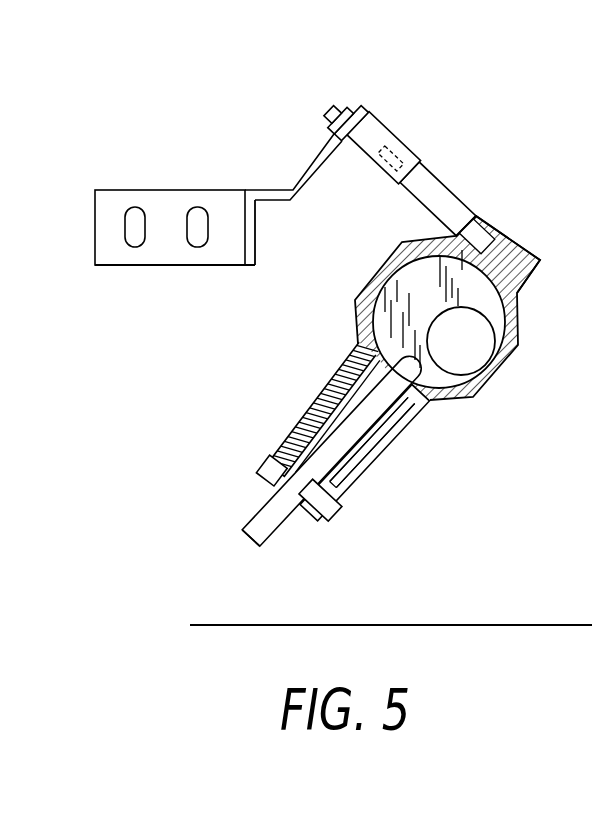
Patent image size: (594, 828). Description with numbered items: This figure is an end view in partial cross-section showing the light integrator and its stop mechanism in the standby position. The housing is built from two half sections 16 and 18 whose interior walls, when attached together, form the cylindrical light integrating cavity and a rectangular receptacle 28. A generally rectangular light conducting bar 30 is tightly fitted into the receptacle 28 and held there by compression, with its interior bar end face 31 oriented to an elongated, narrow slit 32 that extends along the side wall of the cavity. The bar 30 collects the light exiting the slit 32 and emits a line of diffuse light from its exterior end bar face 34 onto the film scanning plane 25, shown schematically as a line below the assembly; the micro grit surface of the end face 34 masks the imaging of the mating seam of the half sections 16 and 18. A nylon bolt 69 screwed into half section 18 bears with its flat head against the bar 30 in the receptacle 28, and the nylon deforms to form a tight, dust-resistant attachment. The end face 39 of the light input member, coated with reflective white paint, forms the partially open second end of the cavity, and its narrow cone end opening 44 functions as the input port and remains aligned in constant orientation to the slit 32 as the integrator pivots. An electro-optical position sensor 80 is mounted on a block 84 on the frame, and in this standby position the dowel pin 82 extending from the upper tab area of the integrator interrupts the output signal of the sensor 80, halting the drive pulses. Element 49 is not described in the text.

The half section 16 is at (355, 320).
The half section 18 is at (470, 398).
The film scanning plane 25 is at (497, 624).
The rectangular receptacle 28 is at (360, 433).
The light conducting bar 30 is at (268, 518).
The interior bar end face 31 is at (428, 372).
The slit 32 is at (372, 442).
The exterior end bar face 34 is at (246, 534).
The end face 39 is at (412, 288).
The narrow cone end circular opening 44 is at (470, 340).
The stop block 49 is at (262, 472).
The nylon bolt 69 is at (341, 505).
The electro-optical position sensor 80 is at (390, 138).
The dowel pin 82 is at (438, 202).
The block 84 is at (170, 197).